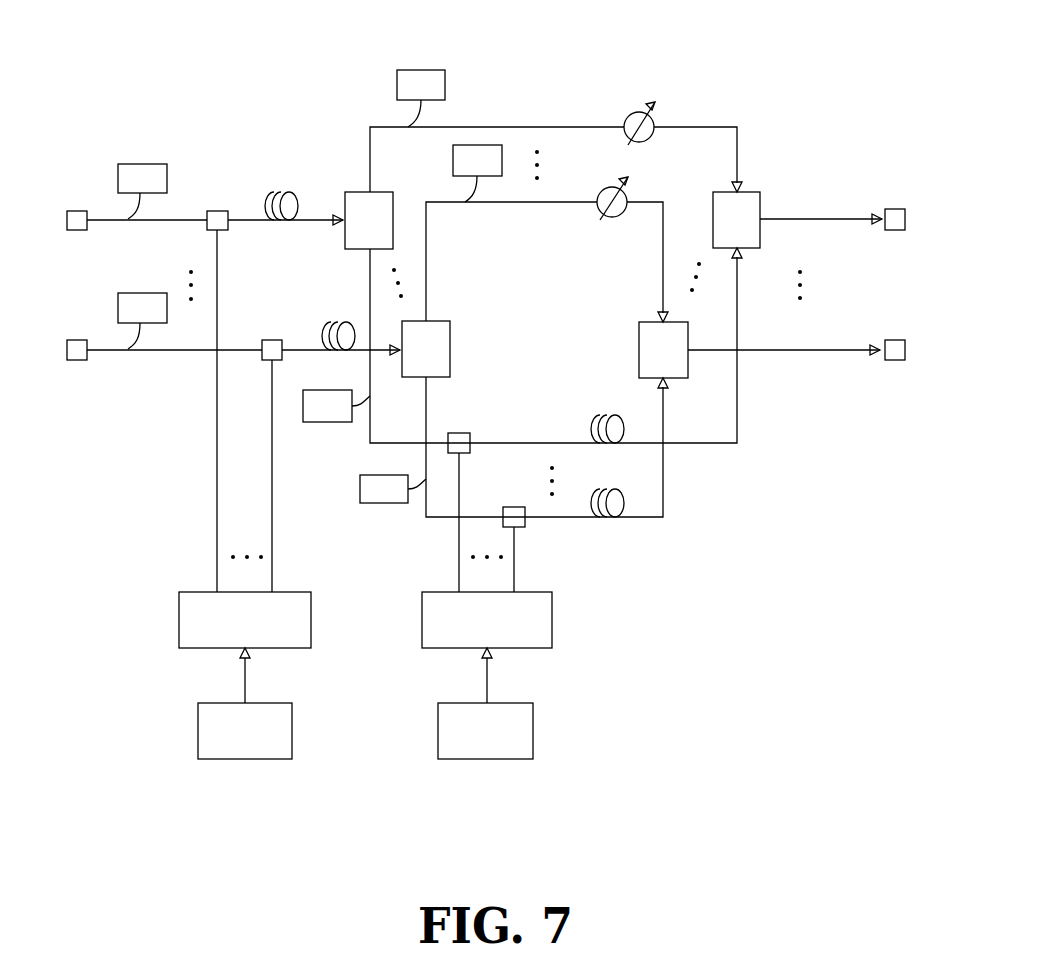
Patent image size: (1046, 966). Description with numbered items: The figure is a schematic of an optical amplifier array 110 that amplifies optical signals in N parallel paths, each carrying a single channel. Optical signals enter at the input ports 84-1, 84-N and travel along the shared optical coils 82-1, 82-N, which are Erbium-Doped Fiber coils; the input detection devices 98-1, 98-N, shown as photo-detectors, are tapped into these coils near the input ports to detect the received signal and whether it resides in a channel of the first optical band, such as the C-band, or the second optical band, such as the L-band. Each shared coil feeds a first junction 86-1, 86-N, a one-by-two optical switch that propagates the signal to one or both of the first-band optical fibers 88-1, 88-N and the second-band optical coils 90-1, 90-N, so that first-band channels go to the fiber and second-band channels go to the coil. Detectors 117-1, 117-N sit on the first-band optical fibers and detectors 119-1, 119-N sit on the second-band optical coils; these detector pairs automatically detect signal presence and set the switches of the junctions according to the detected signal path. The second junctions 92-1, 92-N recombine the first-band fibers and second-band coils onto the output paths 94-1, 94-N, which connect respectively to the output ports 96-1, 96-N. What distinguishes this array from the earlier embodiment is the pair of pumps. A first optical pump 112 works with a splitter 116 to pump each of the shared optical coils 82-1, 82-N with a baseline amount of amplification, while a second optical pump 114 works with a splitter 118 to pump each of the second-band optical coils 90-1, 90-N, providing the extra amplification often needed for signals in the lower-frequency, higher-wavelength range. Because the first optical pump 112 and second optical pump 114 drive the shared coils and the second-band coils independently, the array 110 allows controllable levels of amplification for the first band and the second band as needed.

The optical amplifier array 110 is at (777, 617).
The input port 84-1 is at (80, 210).
The input port 84-N is at (80, 360).
The input detection device 98-1 is at (148, 163).
The input detection device 98-N is at (153, 293).
The shared optical coil 82-1 is at (242, 218).
The shared optical coil 82-N is at (300, 348).
The first junction 86-1 is at (357, 190).
The first junction 86-N is at (450, 348).
The detector 117-1 is at (413, 70).
The detector 117-N is at (488, 145).
The first-band optical fiber 88-1 is at (538, 127).
The first-band optical fiber 88-N is at (568, 203).
The second junction 92-1 is at (713, 222).
The second junction 92-N is at (639, 345).
The output path 94-1 is at (812, 218).
The output path 94-N is at (830, 348).
The output port 96-1 is at (895, 210).
The output port 96-N is at (893, 340).
The second-band optical coil 90-1 is at (570, 442).
The second-band optical coil 90-N is at (640, 519).
The detector 119-1 is at (327, 422).
The detector 119-N is at (380, 503).
The splitter 116 is at (179, 620).
The splitter 118 is at (422, 630).
The first optical pump 112 is at (198, 733).
The second optical pump 114 is at (438, 733).